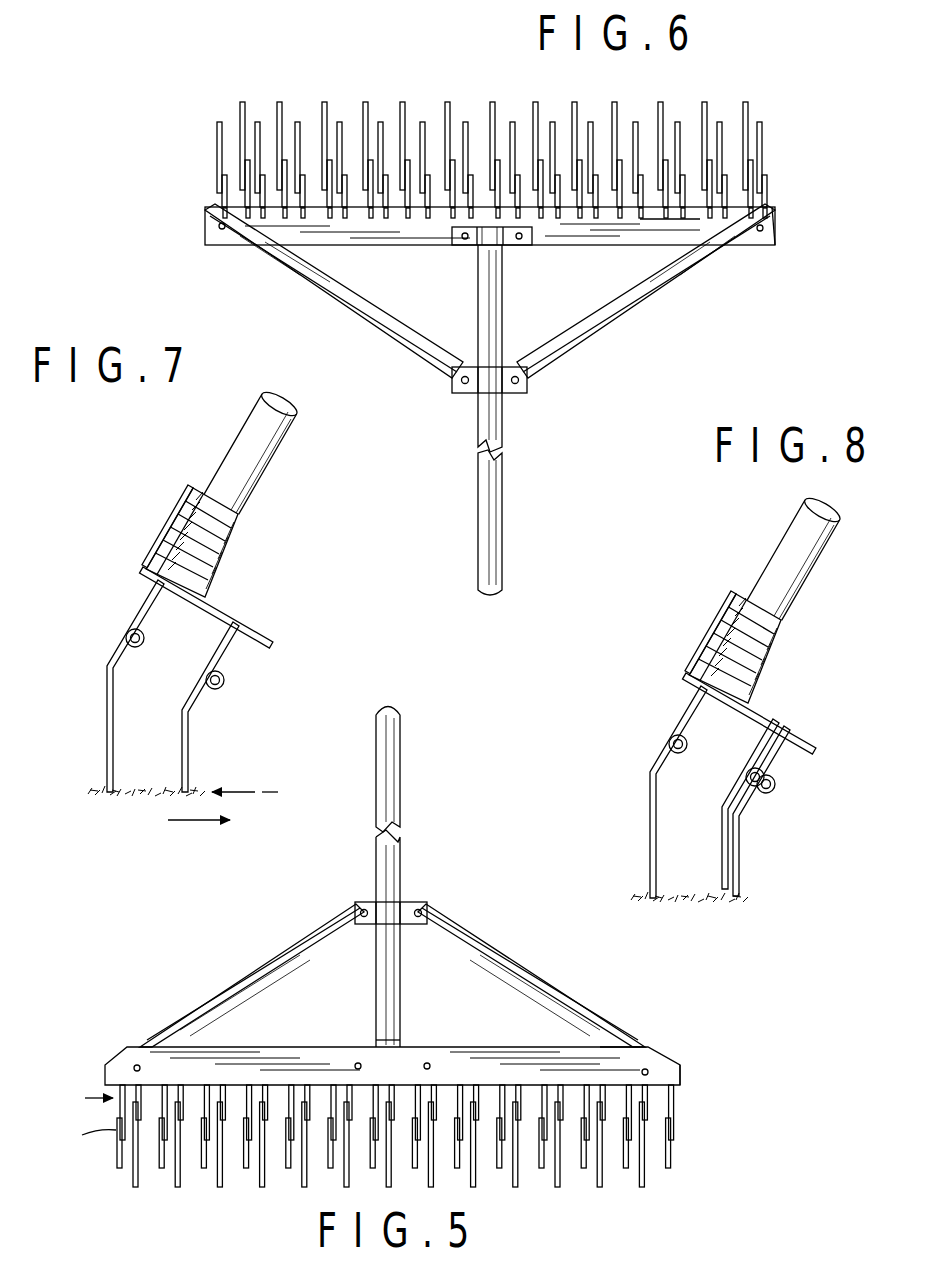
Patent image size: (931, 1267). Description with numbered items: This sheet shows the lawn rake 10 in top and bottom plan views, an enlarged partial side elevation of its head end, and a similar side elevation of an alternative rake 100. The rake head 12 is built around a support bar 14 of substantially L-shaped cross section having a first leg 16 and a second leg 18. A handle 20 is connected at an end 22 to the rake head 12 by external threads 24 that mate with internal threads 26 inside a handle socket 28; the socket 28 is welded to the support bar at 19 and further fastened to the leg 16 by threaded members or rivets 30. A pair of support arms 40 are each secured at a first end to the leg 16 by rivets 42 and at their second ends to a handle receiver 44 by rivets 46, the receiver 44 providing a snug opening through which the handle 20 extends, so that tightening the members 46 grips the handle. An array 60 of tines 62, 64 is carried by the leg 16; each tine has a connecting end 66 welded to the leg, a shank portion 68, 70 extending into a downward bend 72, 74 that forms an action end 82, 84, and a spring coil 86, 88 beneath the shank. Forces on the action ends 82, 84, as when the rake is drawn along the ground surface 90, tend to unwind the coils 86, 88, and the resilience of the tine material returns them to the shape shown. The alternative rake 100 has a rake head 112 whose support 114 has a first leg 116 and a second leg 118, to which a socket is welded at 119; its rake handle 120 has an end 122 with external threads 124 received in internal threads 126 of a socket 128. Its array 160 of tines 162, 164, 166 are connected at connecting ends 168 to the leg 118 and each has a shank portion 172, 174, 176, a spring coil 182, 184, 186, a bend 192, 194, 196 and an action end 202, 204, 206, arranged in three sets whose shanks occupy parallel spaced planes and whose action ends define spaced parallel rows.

In FIG. 6, the lawn rake 10 is at (469, 325).
In FIG. 7, the lawn rake 10 is at (195, 611).
In FIG. 5, the lawn rake 10 is at (389, 971).
In FIG. 6, the rake head 12 is at (572, 238).
In FIG. 7, the rake head 12 is at (202, 622).
In FIG. 5, the rake head 12 is at (468, 1067).
In FIG. 6, the support bar 14 is at (222, 237).
In FIG. 7, the support bar 14 is at (184, 524).
In FIG. 5, the support bar 14 is at (666, 1050).
In FIG. 6, the first leg 16 is at (663, 228).
In FIG. 7, the first leg 16 is at (185, 500).
In FIG. 5, the first leg 16 is at (606, 1053).
In FIG. 6, the second leg 18 is at (777, 205).
In FIG. 7, the second leg 18 is at (206, 613).
In FIG. 5, the second leg 18 is at (682, 1092).
In FIG. 7, the welding 19 is at (222, 472).
In FIG. 6, the handle 20 is at (496, 542).
In FIG. 7, the handle 20 is at (290, 440).
In FIG. 5, the handle 20 is at (400, 765).
In FIG. 6, the end 22 is at (497, 265).
In FIG. 7, the end 22 is at (206, 524).
In FIG. 5, the end 22 is at (408, 1046).
In FIG. 7, the external threads 24 is at (226, 525).
In FIG. 7, the internal threads 26 is at (225, 560).
In FIG. 6, the handle socket 28 is at (486, 244).
In FIG. 7, the handle socket 28 is at (175, 528).
In FIG. 6, the threaded members or rivets 30 is at (463, 240).
In FIG. 5, the threaded members or rivets 30 is at (358, 1062).
In FIG. 6, the support arms 40 is at (414, 352).
In FIG. 5, the support arms 40 is at (270, 962).
In FIG. 6, the threaded members or rivets 42 is at (219, 224).
In FIG. 5, the threaded members or rivets 42 is at (137, 1064).
In FIG. 6, the handle receiver 44 is at (498, 370).
In FIG. 5, the handle receiver 44 is at (403, 914).
In FIG. 6, the threaded members or rivets 46 is at (468, 377).
In FIG. 5, the threaded members or rivets 46 is at (364, 904).
In FIG. 6, the array of tines 60 is at (462, 137).
In FIG. 5, the array of tines 60 is at (387, 1160).
In FIG. 6, the tines 62 is at (224, 122).
In FIG. 7, the tines 62 is at (195, 725).
In FIG. 5, the tines 62 is at (118, 1178).
In FIG. 6, the tines 64 is at (255, 103).
In FIG. 7, the tines 64 is at (100, 691).
In FIG. 5, the tines 64 is at (135, 1190).
In FIG. 6, the connecting end 66 is at (712, 228).
In FIG. 7, the connecting end 66 is at (152, 580).
In FIG. 7, the shank portion 68 is at (248, 654).
In FIG. 7, the shank portion 70 is at (112, 656).
In FIG. 6, the downward bend 72 is at (212, 162).
In FIG. 7, the downward bend 72 is at (190, 716).
In FIG. 7, the downward bend 74 is at (108, 690).
In FIG. 7, the action end 82 is at (187, 752).
In FIG. 7, the action end 84 is at (112, 746).
In FIG. 6, the spring coil 86 is at (758, 118).
In FIG. 7, the spring coil 86 is at (225, 681).
In FIG. 5, the spring coil 86 is at (661, 1118).
In FIG. 6, the spring coil 88 is at (714, 125).
In FIG. 7, the spring coil 88 is at (135, 650).
In FIG. 5, the spring coil 88 is at (641, 1150).
In FIG. 7, the ground surface 90 is at (120, 796).
In FIG. 8, the rake 100 is at (735, 699).
In FIG. 8, the rake head 112 is at (782, 720).
In FIG. 8, the support 114 is at (742, 645).
In FIG. 8, the first leg 116 is at (698, 660).
In FIG. 8, the second leg 118 is at (772, 735).
In FIG. 8, the welding 119 is at (744, 600).
In FIG. 8, the rake handle 120 is at (840, 528).
In FIG. 8, the end 122 is at (760, 645).
In FIG. 8, the external threads 124 is at (800, 612).
In FIG. 8, the internal threads 126 is at (785, 665).
In FIG. 8, the socket 128 is at (722, 628).
In FIG. 8, the array of tines 160 is at (764, 826).
In FIG. 8, the tine 162 is at (764, 826).
In FIG. 8, the tine 164 is at (722, 790).
In FIG. 8, the tine 166 is at (658, 757).
In FIG. 8, the connecting end 168 is at (758, 712).
In FIG. 8, the shank portion 172 is at (752, 816).
In FIG. 8, the shank portion 174 is at (733, 838).
In FIG. 8, the shank portion 176 is at (644, 792).
In FIG. 8, the spring coil 182 is at (782, 795).
In FIG. 8, the spring coil 184 is at (770, 822).
In FIG. 8, the spring coil 186 is at (680, 752).
In FIG. 8, the bend 192 is at (762, 840).
In FIG. 8, the bend 194 is at (728, 868).
In FIG. 8, the bend 196 is at (652, 780).
In FIG. 8, the action end 202 is at (748, 880).
In FIG. 8, the action end 204 is at (736, 900).
In FIG. 8, the action end 206 is at (650, 850).